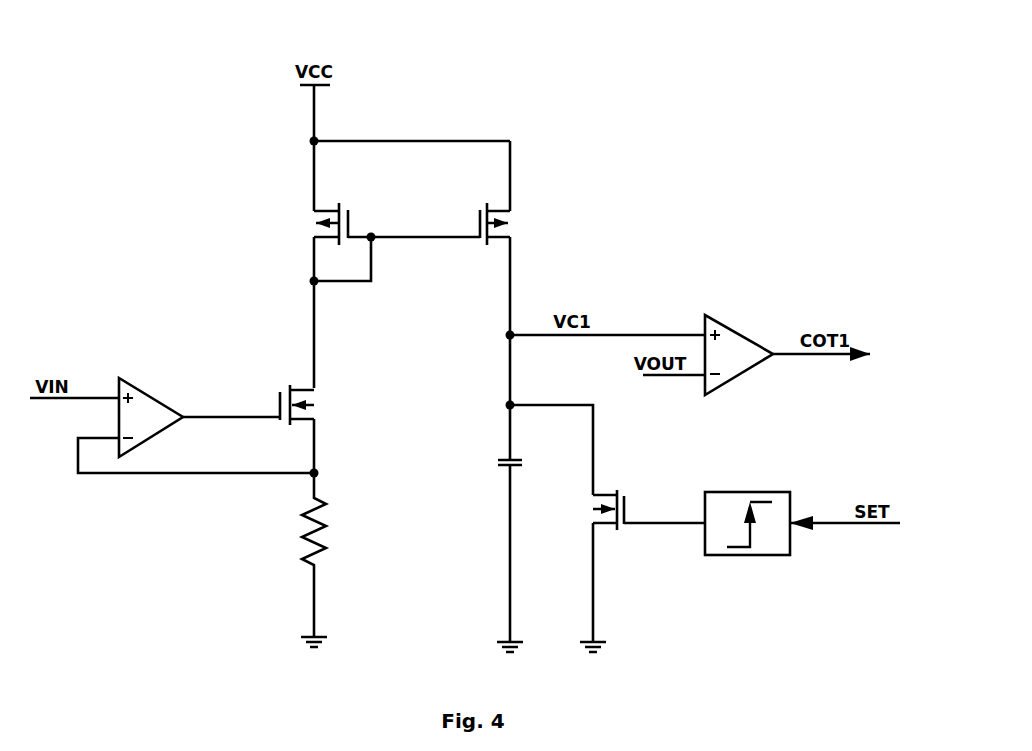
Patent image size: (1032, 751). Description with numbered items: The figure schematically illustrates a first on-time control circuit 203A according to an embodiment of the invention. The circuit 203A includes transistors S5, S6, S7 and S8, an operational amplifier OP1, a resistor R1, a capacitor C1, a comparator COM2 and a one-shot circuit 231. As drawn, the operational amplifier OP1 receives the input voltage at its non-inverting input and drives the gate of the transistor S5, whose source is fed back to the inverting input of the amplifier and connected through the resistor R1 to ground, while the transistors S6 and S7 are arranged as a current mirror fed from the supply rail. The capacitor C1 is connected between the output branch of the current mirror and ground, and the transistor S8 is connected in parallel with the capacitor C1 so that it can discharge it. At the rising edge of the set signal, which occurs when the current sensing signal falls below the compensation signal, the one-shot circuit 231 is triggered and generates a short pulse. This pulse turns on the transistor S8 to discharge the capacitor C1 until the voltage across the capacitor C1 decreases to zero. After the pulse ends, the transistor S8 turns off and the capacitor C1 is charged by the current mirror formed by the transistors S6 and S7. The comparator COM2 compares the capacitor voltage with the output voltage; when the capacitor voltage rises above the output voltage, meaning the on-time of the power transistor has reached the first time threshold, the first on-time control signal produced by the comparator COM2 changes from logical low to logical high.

The transistor S5 is at (316, 405).
The transistor S6 is at (347, 222).
The transistor S7 is at (479, 222).
The transistor S8 is at (612, 524).
The resistor R1 is at (329, 555).
The capacitor C1 is at (492, 464).
The operational amplifier OP1 is at (151, 417).
The comparator COM2 is at (739, 355).
The one-shot circuit 231 is at (723, 556).
The first on-time control circuit 203A is at (732, 83).